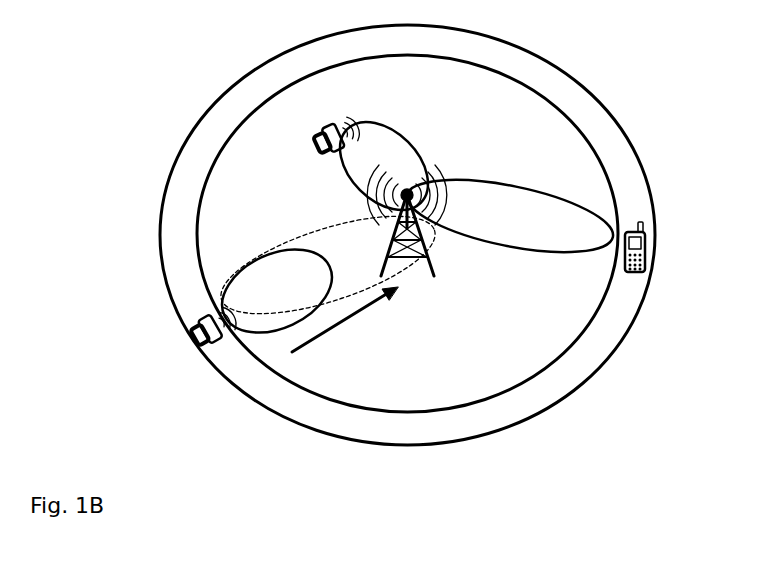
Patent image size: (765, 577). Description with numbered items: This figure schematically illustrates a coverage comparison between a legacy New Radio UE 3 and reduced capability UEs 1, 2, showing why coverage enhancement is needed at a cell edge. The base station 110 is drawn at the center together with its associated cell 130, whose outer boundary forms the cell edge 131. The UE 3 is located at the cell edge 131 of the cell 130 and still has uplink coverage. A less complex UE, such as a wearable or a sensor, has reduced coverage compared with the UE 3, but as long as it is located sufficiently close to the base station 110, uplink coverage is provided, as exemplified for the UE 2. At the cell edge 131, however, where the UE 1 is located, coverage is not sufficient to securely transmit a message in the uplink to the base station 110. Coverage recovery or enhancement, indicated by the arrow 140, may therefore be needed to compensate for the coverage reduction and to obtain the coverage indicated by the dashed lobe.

The cell 130 is at (222, 75).
The cell edge 131 is at (548, 73).
The base station 110 is at (443, 270).
The arrow 140 is at (340, 332).
The reduced capability UE 1 is at (195, 345).
The reduced capability UE 2 is at (322, 150).
The NR UE 3 is at (647, 250).